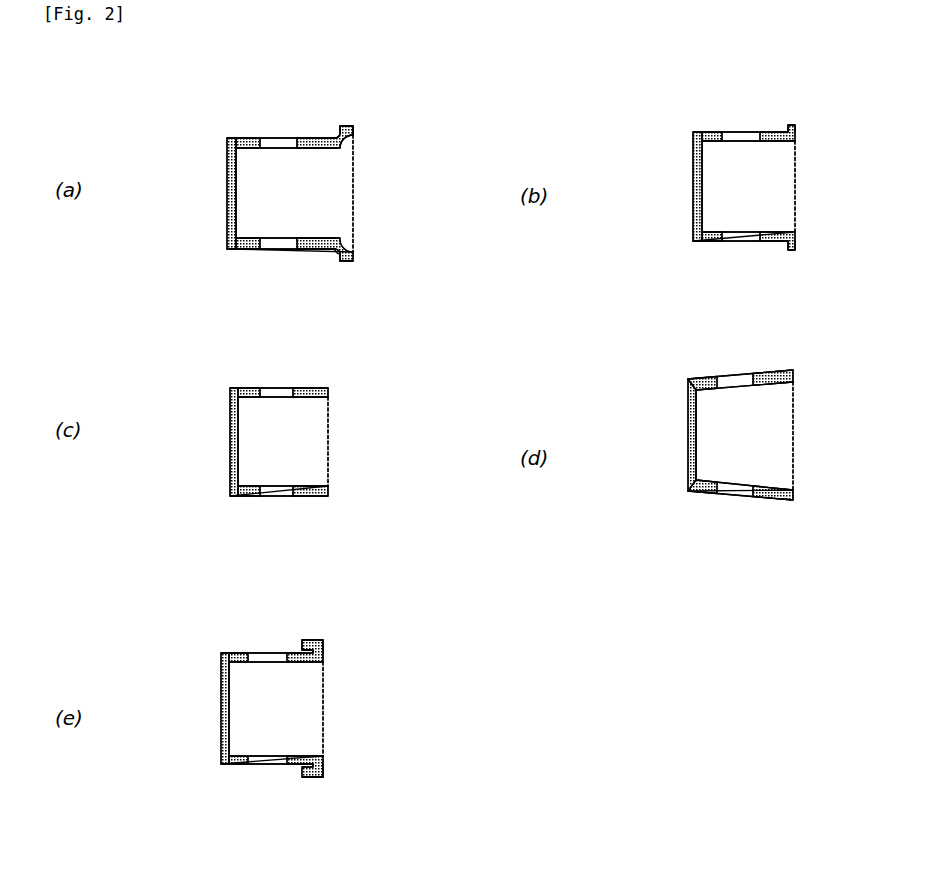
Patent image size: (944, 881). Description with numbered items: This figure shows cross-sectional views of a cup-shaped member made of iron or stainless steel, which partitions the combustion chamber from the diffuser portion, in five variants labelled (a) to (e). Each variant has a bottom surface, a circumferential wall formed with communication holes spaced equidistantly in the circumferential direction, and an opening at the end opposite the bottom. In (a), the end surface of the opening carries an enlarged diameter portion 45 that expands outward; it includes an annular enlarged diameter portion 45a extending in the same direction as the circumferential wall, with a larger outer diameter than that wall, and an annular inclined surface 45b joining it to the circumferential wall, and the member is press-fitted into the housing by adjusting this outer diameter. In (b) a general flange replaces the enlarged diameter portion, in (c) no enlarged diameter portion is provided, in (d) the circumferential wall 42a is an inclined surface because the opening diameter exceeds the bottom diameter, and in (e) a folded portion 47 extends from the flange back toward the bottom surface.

The circumferential wall 42a is at (765, 372).
The enlarged diameter portion 45 is at (400, 57).
The annular enlarged diameter portion 45a is at (342, 130).
The annular inclined surface 45b is at (333, 130).
The folded portion 47 is at (308, 640).